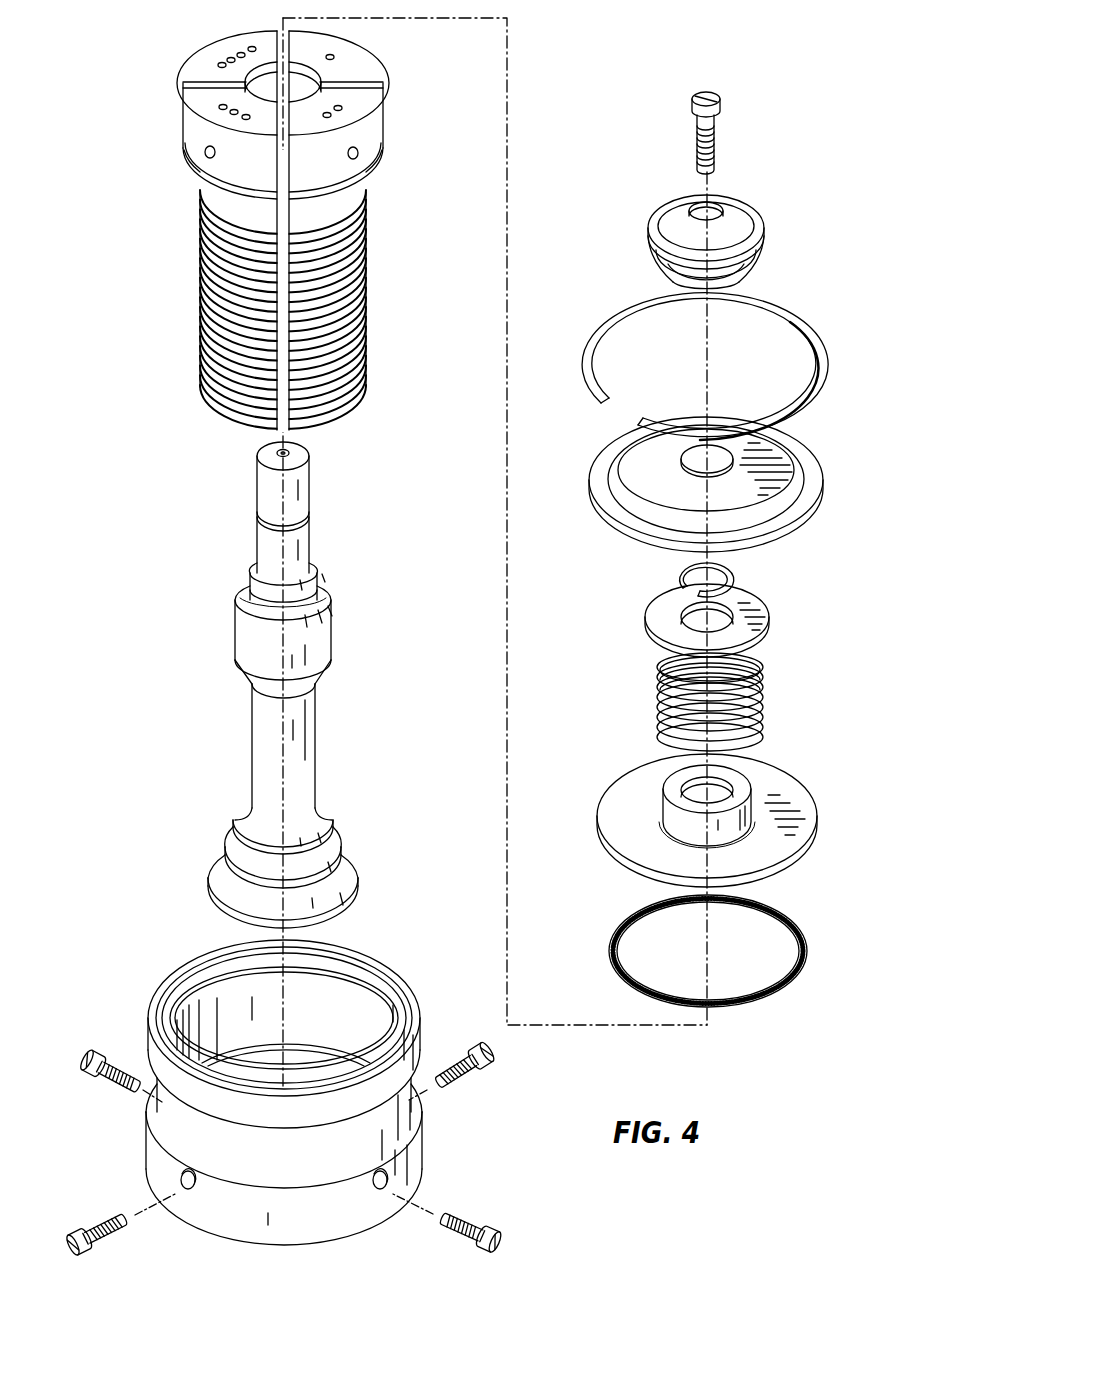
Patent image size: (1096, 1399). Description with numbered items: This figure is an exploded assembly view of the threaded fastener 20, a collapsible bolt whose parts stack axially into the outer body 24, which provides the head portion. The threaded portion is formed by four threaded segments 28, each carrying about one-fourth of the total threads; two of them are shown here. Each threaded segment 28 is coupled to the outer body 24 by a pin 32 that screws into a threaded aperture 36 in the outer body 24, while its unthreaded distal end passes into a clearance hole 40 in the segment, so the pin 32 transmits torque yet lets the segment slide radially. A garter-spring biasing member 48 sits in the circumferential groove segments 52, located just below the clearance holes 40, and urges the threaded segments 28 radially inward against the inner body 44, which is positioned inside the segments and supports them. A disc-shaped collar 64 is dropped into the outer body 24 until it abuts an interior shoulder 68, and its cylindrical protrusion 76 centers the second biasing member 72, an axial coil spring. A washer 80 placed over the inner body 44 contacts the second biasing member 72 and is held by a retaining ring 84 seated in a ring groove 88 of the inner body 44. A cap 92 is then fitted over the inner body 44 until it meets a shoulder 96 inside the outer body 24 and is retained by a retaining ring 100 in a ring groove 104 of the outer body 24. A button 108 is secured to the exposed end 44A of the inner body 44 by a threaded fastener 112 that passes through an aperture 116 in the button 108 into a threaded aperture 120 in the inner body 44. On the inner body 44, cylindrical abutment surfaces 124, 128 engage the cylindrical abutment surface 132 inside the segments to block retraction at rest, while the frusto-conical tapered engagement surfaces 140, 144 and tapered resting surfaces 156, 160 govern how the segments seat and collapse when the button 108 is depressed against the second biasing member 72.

The threaded fastener 20 is at (115, 124).
The outer body 24 is at (160, 961).
The threaded segments 28 is at (202, 68).
The pin 32 is at (116, 1086).
The threaded aperture 36 is at (189, 1191).
The clearance holes 40 is at (210, 158).
The inner body 44 is at (199, 676).
The end of the inner body 44A is at (337, 486).
The biasing member 48 is at (793, 912).
The groove segment 52 is at (183, 152).
The collar 64 is at (701, 797).
The shoulder 68 is at (344, 1046).
The second biasing member 72 is at (772, 697).
The protrusion 76 is at (676, 819).
The washer 80 is at (780, 620).
The retaining ring 84 is at (732, 562).
The ring groove 88 is at (267, 521).
The cap 92 is at (825, 449).
The shoulder 96 is at (341, 980).
The retaining ring 100 is at (778, 312).
The ring groove 104 is at (366, 972).
The button 108 is at (732, 217).
The threaded fastener 112 is at (732, 123).
The aperture 116 is at (699, 203).
The threaded aperture 120 is at (279, 454).
The abutment surface 124 is at (272, 611).
The abutment surface 128 is at (241, 884).
The abutment surface 132 is at (268, 64).
The tapered engagement surface 140 is at (251, 574).
The tapered engagement surface 144 is at (230, 830).
The tapered resting surface 156 is at (242, 605).
The tapered resting surface 160 is at (216, 865).